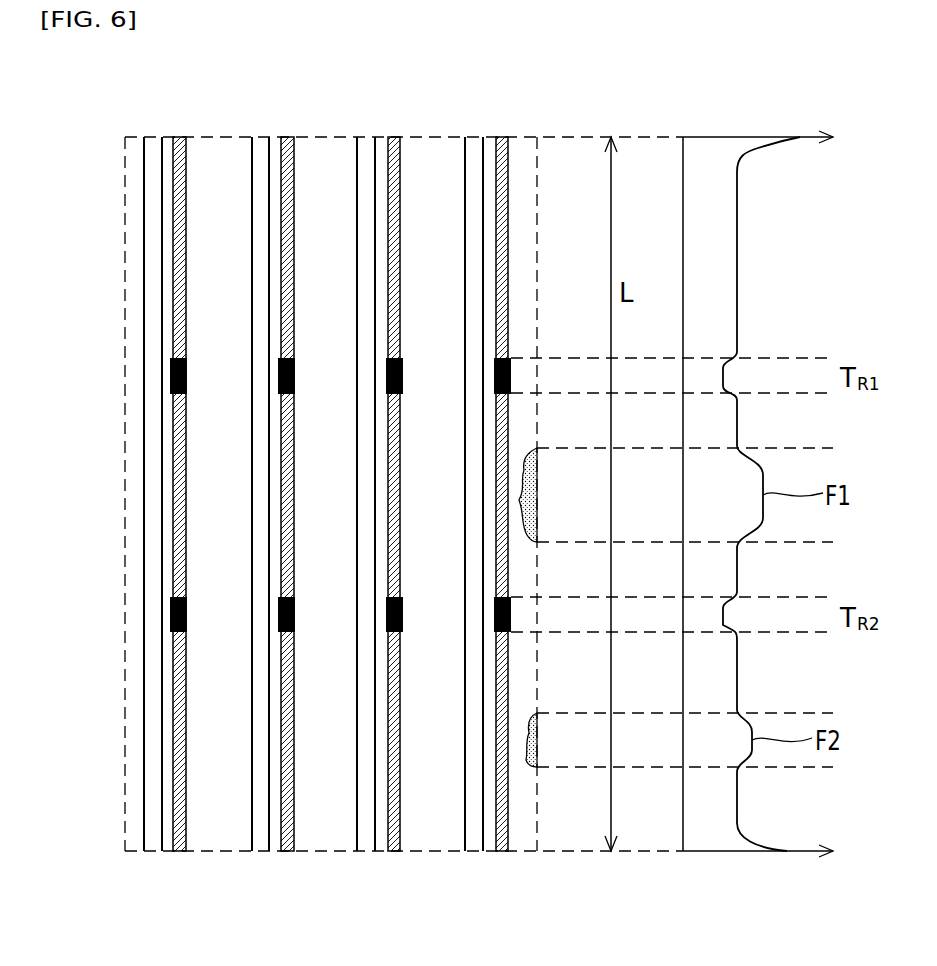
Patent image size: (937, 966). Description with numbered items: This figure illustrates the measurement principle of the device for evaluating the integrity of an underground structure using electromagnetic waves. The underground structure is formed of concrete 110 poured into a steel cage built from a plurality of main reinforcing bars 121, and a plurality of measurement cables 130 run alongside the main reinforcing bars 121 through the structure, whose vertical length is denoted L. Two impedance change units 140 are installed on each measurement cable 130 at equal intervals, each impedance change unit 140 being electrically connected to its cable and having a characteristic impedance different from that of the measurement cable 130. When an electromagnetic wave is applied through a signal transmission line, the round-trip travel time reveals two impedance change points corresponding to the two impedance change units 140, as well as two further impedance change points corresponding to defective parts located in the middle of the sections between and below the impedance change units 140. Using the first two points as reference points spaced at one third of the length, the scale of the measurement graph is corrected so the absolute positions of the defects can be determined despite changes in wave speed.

The concrete 110 is at (133, 168).
The main reinforcing bar 121 is at (155, 142).
The measurement cable 130 is at (181, 851).
The impedance change unit 140 is at (278, 362).